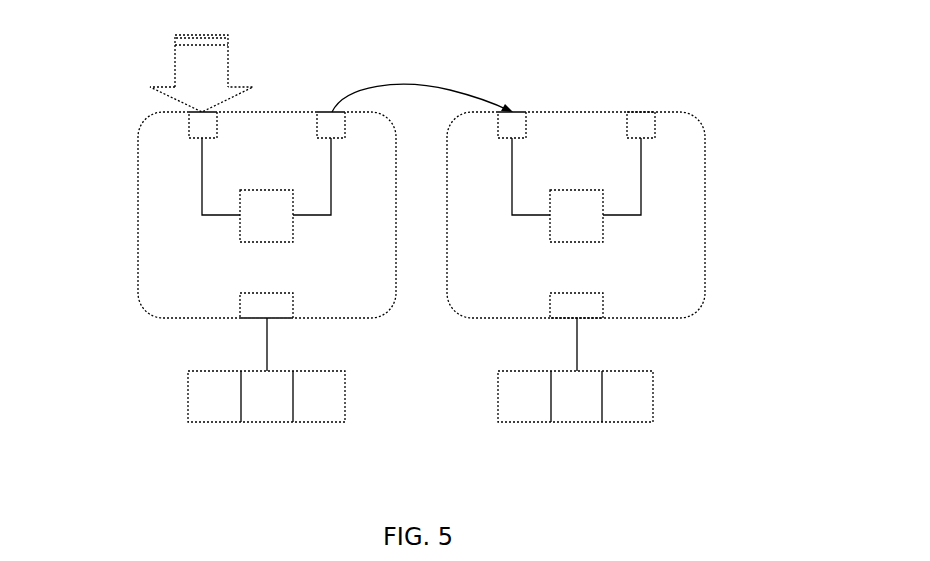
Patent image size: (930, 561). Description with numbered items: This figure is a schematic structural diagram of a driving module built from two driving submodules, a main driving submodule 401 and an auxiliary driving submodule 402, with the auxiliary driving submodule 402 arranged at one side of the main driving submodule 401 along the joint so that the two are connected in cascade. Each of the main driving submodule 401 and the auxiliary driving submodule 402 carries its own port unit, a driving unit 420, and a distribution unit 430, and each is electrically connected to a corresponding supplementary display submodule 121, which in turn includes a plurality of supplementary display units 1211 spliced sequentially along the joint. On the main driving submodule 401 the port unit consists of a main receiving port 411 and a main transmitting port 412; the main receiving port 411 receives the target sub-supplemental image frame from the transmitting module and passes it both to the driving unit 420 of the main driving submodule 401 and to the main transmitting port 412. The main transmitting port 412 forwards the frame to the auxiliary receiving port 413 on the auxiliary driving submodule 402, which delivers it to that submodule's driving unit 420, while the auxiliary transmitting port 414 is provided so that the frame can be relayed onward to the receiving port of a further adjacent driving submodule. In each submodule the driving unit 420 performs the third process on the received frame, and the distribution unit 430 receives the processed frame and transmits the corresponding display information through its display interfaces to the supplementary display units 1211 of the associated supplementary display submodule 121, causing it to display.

The main driving submodule 401 is at (116, 240).
The auxiliary driving submodule 402 is at (728, 216).
The main receiving port 411 is at (189, 125).
The main transmitting port 412 is at (317, 130).
The auxiliary receiving port 413 is at (526, 127).
The auxiliary transmitting port 414 is at (640, 111).
The driving unit 420 is at (267, 242).
The distribution unit 430 is at (550, 305).
The supplementary display submodule 121 is at (170, 390).
The supplementary display unit 1211 is at (267, 397).